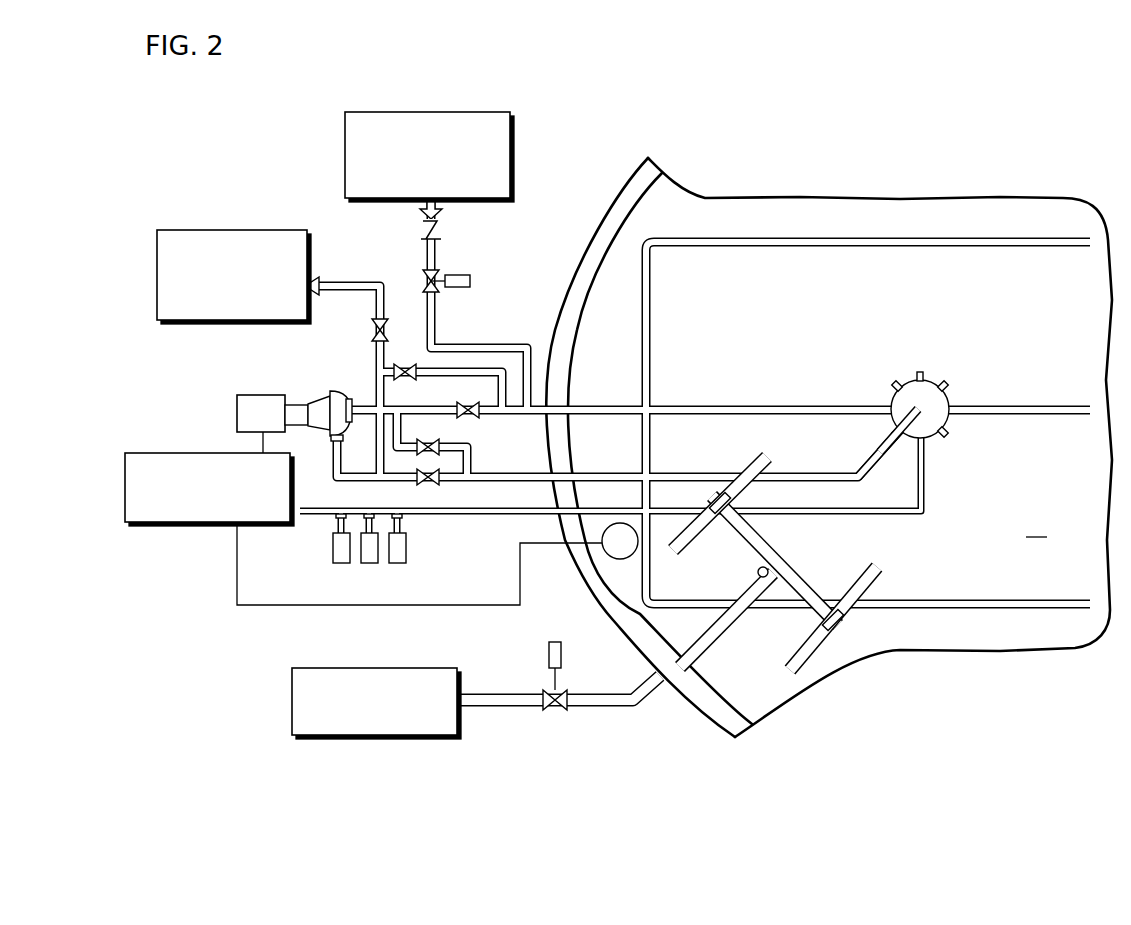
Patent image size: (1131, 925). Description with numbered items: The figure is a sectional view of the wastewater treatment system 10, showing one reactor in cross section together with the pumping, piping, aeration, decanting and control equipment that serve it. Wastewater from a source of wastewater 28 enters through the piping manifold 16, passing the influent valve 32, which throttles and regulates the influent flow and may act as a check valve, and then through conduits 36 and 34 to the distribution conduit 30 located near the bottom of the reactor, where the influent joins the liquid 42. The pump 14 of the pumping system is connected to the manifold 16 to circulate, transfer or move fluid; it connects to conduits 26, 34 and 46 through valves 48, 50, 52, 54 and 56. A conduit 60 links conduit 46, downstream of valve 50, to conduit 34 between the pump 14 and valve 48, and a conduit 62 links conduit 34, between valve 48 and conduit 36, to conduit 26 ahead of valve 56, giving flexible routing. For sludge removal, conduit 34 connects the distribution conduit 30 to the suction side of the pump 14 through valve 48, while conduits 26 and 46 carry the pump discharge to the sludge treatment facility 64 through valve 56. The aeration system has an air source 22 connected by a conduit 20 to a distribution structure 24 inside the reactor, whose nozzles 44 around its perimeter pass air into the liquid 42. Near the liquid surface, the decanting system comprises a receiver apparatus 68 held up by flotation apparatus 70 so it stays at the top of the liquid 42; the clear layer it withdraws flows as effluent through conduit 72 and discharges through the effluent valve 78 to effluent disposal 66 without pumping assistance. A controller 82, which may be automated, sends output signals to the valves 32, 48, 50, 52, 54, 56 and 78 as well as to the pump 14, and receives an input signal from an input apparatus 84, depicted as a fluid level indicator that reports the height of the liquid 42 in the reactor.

The wastewater treatment system 10 is at (250, 148).
The pump 14 is at (330, 395).
The piping manifold 16 is at (375, 384).
The conduit 20 is at (472, 517).
The air source 22 is at (333, 546).
The distribution structure 24 is at (938, 432).
The sludge conduit 26 is at (367, 438).
The source of wastewater 28 is at (462, 111).
The distribution conduit 30 is at (946, 248).
The influent valve 32 is at (440, 279).
The conduit 34 is at (540, 414).
The conduit 36 is at (438, 320).
The liquid 42 is at (1036, 527).
The nozzles 44 is at (947, 389).
The conduit 46 is at (492, 474).
The valve 48 is at (463, 406).
The valve 50 is at (437, 484).
The valve 52 is at (430, 444).
The valve 54 is at (411, 381).
The valve 56 is at (388, 331).
The conduit 60 is at (466, 446).
The conduit 62 is at (460, 378).
The sludge treatment facility 64 is at (216, 229).
The effluent disposal 66 is at (292, 720).
The receiver apparatus 68 is at (768, 540).
The flotation apparatus 70 is at (757, 463).
The conduit 72 is at (714, 636).
The effluent valve 78 is at (557, 710).
The controller 82 is at (130, 523).
The input apparatus 84 is at (614, 557).